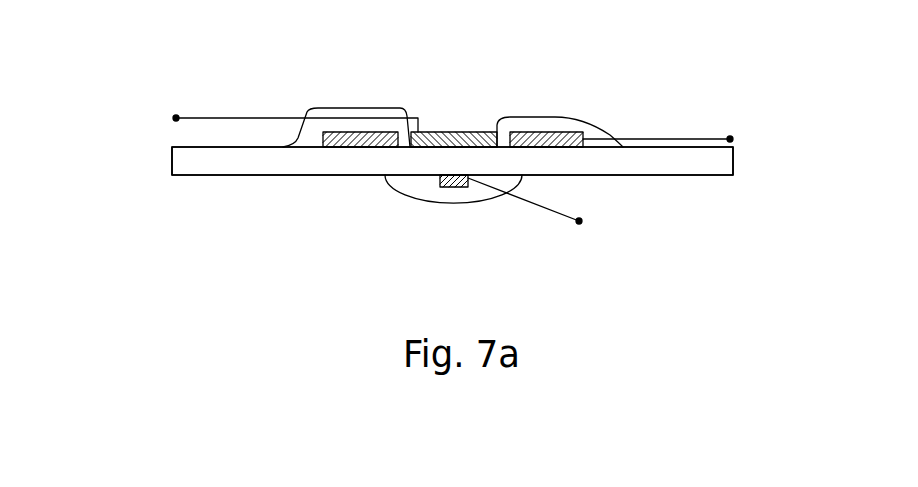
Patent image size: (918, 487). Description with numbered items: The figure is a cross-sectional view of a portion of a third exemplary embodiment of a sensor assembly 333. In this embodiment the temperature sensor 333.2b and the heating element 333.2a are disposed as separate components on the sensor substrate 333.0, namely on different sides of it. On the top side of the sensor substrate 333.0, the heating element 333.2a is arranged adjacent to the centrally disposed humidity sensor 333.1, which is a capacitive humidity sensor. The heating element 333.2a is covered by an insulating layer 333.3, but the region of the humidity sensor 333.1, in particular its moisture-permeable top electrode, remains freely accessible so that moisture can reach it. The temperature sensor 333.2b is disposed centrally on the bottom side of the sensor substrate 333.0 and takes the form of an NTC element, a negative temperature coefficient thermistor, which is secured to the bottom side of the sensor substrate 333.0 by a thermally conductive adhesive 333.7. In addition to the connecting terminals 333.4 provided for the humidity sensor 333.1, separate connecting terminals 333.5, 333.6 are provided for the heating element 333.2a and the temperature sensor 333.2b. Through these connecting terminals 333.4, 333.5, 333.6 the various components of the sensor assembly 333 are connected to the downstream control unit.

The sensor assembly 333 is at (136, 174).
The sensor substrate 333.0 is at (243, 163).
The humidity sensor 333.1 is at (440, 132).
The heating element 333.2a is at (353, 132).
The temperature sensor 333.2b is at (455, 187).
The insulating layer 333.3 is at (522, 113).
The connecting terminals 333.4 is at (176, 118).
The connecting terminals 333.5 is at (730, 139).
The connecting terminals 333.6 is at (579, 221).
The thermally conductive adhesive 333.7 is at (417, 190).